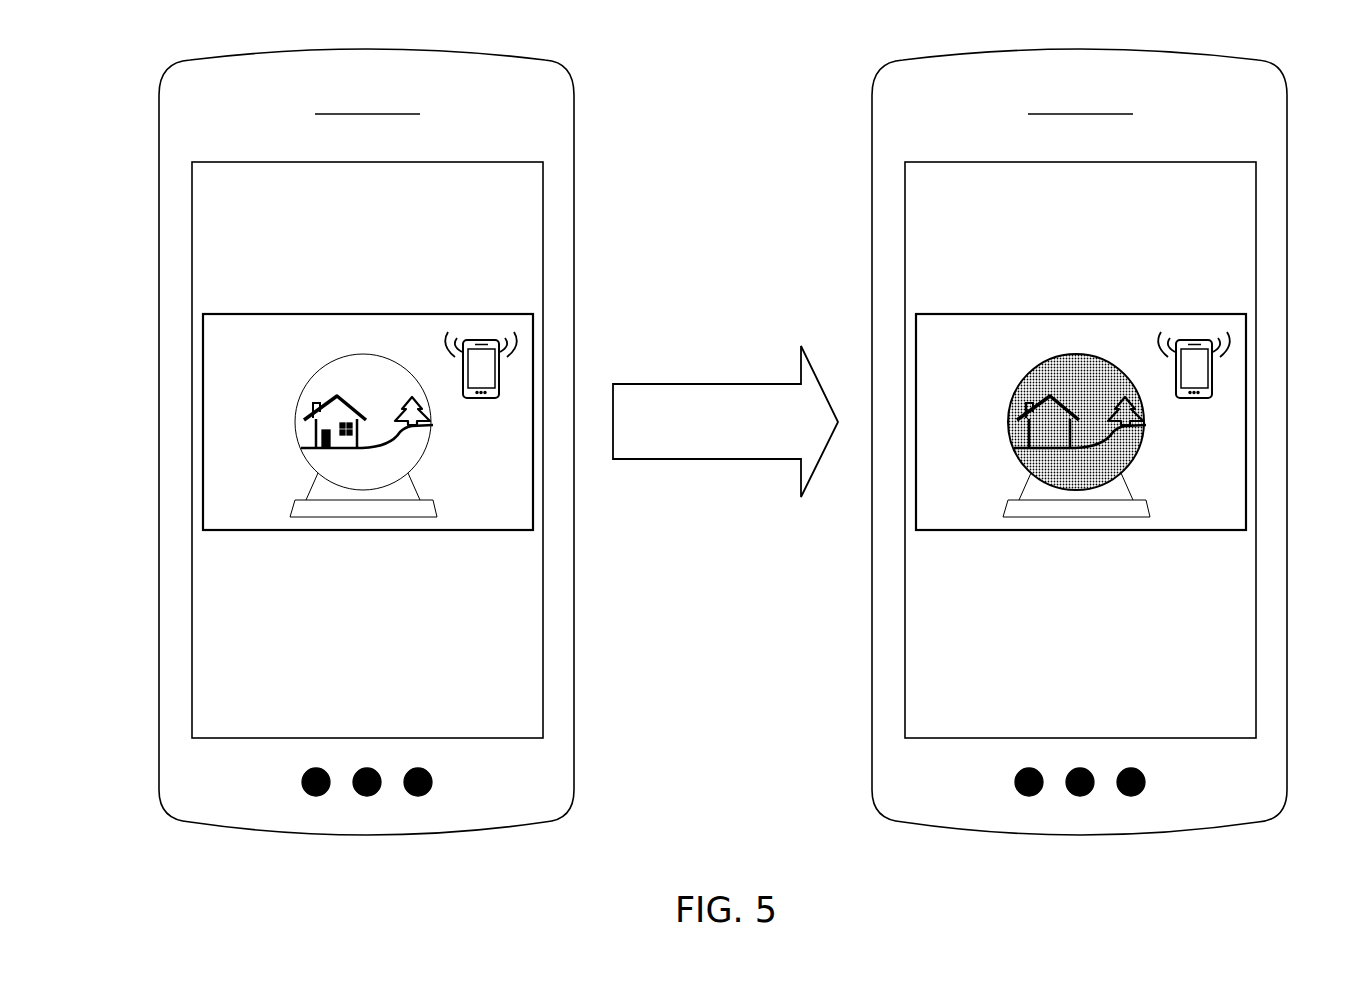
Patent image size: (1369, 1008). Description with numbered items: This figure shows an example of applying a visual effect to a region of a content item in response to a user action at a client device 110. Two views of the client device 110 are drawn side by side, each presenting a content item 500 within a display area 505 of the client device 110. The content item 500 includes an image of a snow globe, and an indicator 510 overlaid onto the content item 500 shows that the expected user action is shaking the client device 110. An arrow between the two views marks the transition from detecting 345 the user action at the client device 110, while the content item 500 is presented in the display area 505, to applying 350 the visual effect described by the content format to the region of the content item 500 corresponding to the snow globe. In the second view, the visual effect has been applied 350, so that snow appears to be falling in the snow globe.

The client device 110 is at (462, 50).
The display area 505 is at (543, 162).
The content item 500 is at (262, 314).
The indicator 510 is at (485, 331).
The detecting 345 is at (725, 421).
The applying 350 is at (725, 421).